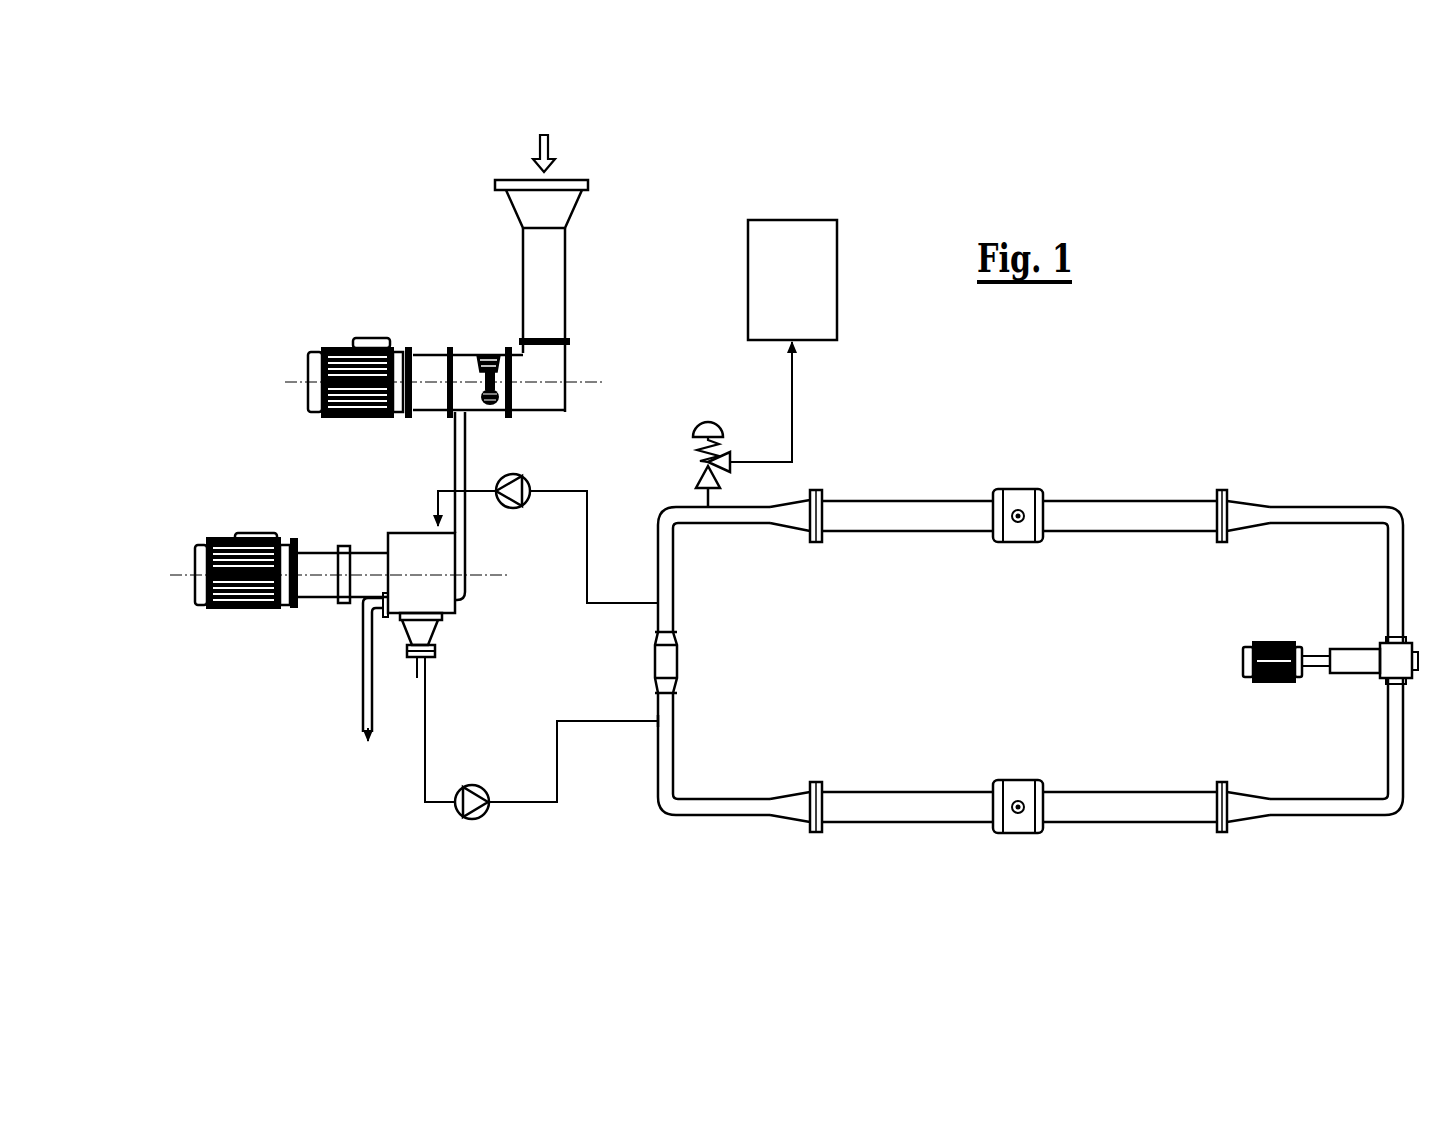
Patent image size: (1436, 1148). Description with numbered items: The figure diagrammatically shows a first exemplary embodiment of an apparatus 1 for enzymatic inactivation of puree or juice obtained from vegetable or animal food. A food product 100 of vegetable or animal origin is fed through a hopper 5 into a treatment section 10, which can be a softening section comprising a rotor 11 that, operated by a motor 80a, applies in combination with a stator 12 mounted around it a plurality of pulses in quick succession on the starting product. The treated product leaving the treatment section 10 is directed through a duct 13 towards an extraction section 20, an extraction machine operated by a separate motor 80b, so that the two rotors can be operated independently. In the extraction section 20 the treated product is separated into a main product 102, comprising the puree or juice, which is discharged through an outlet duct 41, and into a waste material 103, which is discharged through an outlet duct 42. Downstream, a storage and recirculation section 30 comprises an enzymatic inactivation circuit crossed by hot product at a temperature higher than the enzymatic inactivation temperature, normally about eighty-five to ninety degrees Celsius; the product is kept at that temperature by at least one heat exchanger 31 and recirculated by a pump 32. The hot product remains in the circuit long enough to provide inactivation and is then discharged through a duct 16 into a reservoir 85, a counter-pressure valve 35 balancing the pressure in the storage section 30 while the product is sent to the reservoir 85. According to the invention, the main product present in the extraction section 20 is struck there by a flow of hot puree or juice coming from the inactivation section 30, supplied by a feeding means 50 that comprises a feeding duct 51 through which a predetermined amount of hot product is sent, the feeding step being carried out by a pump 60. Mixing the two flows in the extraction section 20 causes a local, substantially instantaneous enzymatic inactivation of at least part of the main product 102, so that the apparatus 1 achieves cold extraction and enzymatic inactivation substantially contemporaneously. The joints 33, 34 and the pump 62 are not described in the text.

The apparatus 1 is at (304, 184).
The hopper 5 is at (592, 186).
The treatment section 10 is at (462, 305).
The rotor 11 is at (489, 353).
The stator 12 is at (474, 370).
The duct 13 is at (458, 465).
The duct 16 is at (786, 372).
The extraction section 20 is at (375, 531).
The storage and recirculation section 30 is at (1283, 380).
The heat exchanger 31 is at (1155, 500).
The pump 32 is at (1315, 625).
The inlet connection 33 is at (666, 603).
The outlet connection 34 is at (660, 722).
The counter-pressure valve 35 is at (690, 432).
The outlet duct 41 is at (432, 627).
The outlet duct 42 is at (366, 618).
The feeding means 50 is at (600, 775).
The feeding duct 51 is at (590, 548).
The pump 60 is at (527, 480).
The pump 62 is at (462, 818).
The motor 80a is at (298, 342).
The motor 80b is at (212, 620).
The reservoir 85 is at (748, 270).
The food product 100 is at (562, 150).
The main product 102 is at (430, 676).
The waste material 103 is at (360, 742).